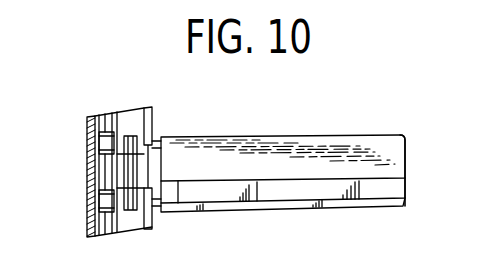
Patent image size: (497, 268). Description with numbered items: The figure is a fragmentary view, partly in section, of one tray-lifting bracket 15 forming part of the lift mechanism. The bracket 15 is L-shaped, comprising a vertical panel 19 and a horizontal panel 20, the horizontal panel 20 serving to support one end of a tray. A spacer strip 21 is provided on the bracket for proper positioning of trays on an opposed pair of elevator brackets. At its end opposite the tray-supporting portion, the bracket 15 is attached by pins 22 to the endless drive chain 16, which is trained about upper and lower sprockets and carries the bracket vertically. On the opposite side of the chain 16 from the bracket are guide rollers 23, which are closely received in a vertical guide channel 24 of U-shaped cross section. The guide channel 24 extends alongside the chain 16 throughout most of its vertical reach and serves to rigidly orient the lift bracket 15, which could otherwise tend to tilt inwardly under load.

The tray-lifting bracket 15 is at (322, 140).
The endless chain 16 is at (152, 113).
The vertical panel 19 is at (397, 155).
The horizontal panel 20 is at (362, 206).
The spacer strip 21 is at (388, 192).
The pin 22 is at (172, 138).
The guide roller 23 is at (100, 150).
The guide channel 24 is at (88, 117).